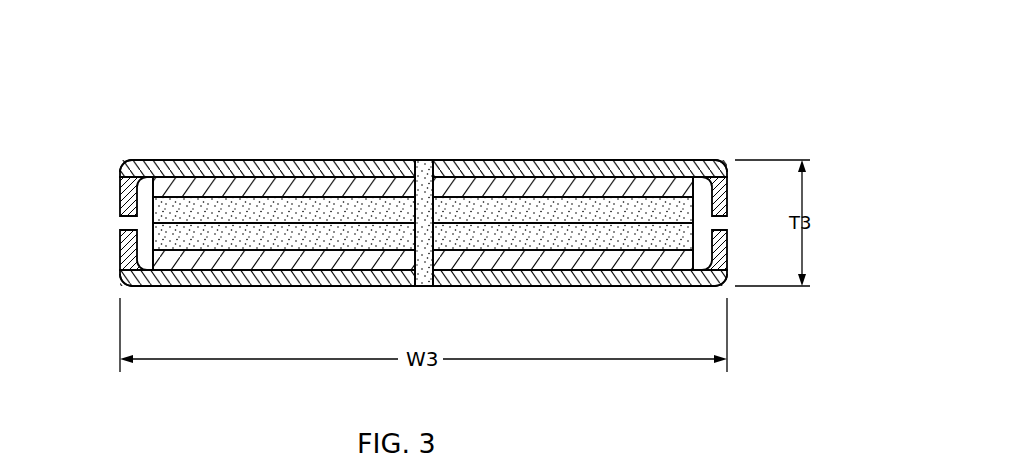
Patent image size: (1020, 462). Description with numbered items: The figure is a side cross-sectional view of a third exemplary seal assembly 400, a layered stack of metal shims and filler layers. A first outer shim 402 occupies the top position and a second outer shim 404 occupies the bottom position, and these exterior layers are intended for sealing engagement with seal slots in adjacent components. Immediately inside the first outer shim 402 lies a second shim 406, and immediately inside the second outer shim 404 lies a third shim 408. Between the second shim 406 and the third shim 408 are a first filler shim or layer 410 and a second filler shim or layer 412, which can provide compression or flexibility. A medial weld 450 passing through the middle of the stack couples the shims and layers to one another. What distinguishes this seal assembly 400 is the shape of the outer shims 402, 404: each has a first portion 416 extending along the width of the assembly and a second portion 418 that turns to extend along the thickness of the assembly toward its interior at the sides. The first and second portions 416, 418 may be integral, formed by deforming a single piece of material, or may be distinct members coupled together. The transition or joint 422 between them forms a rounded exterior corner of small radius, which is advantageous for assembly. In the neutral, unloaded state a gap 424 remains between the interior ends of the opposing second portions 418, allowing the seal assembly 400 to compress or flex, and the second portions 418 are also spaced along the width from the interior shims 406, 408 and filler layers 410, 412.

The seal assembly 400 is at (626, 66).
The first outer shim 402 is at (331, 172).
The second outer shim 404 is at (333, 280).
The second shim 406 is at (276, 187).
The third shim 408 is at (277, 262).
The first filler shim or layer 410 is at (219, 205).
The second filler shim or layer 412 is at (222, 235).
The first portion 416 is at (558, 172).
The second portion 418 is at (138, 198).
The transition or joint 422 is at (128, 163).
The gap 424 is at (108, 222).
The medial weld 450 is at (421, 172).